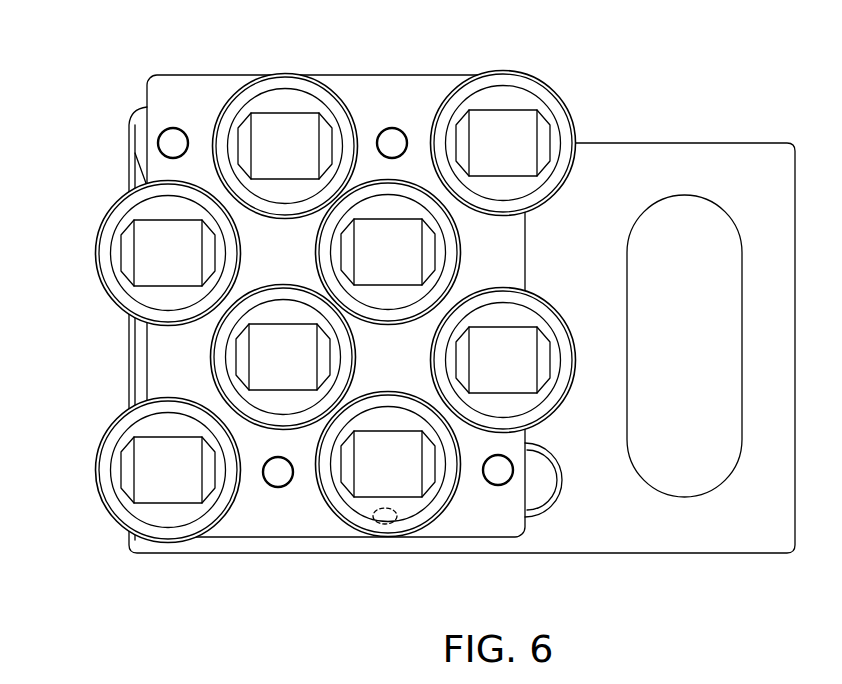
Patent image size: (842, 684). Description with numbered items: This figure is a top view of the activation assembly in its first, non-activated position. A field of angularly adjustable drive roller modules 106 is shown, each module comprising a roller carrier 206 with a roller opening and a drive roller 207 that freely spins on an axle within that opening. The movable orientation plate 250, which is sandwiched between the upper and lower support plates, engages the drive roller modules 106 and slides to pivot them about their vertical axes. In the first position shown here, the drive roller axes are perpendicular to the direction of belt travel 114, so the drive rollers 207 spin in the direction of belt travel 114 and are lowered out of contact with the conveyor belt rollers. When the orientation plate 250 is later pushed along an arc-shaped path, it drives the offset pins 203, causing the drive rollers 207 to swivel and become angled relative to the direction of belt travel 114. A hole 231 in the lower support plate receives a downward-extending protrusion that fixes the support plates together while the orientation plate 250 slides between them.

The drive roller module 106 is at (376, 277).
The direction of belt travel 114 is at (60, 311).
The offset pin 203 is at (372, 515).
The roller carrier 206 is at (572, 117).
The drive roller 207 is at (520, 135).
The hole 231 is at (548, 492).
The movable orientation plate 250 is at (728, 518).